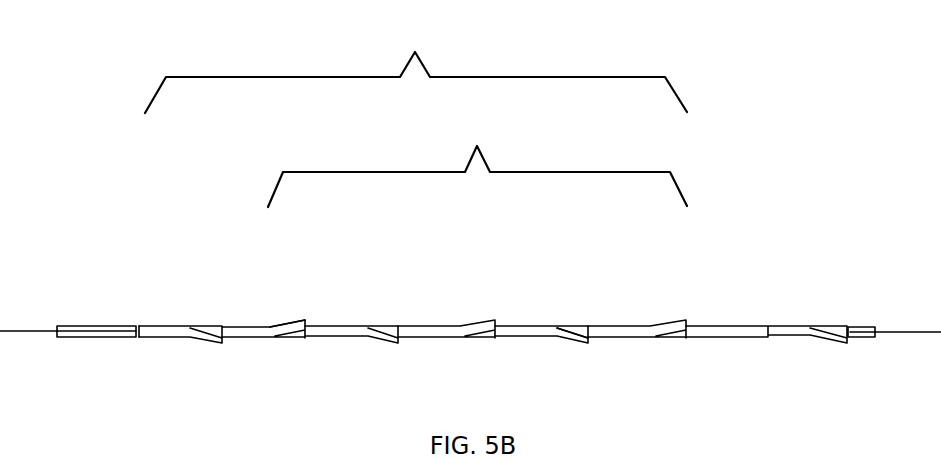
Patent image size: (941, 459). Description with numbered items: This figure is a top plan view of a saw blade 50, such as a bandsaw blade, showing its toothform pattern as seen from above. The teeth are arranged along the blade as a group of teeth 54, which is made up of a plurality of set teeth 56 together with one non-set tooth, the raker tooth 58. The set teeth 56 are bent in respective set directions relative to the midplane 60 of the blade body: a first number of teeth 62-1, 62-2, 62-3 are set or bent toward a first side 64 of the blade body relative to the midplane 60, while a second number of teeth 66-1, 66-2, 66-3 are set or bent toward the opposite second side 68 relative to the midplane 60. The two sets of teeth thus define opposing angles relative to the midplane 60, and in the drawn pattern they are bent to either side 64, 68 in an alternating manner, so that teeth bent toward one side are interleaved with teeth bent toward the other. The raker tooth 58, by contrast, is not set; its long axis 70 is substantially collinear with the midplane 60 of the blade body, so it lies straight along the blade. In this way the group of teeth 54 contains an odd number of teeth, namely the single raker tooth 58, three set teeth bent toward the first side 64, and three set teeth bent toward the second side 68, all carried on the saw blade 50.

The saw blade 50 is at (851, 236).
The group of teeth 54 is at (416, 68).
The set teeth 56 is at (477, 160).
The raker tooth 58 is at (133, 325).
The midplane 60 is at (923, 332).
The first number of teeth 62-1 is at (222, 343).
The first number of teeth 62-2 is at (398, 343).
The first number of teeth 62-3 is at (590, 343).
The first side 64 is at (303, 378).
The second number of teeth 66-1 is at (303, 320).
The second number of teeth 66-2 is at (493, 320).
The second number of teeth 66-3 is at (686, 320).
The second side 68 is at (582, 270).
The long axis 70 is at (110, 338).